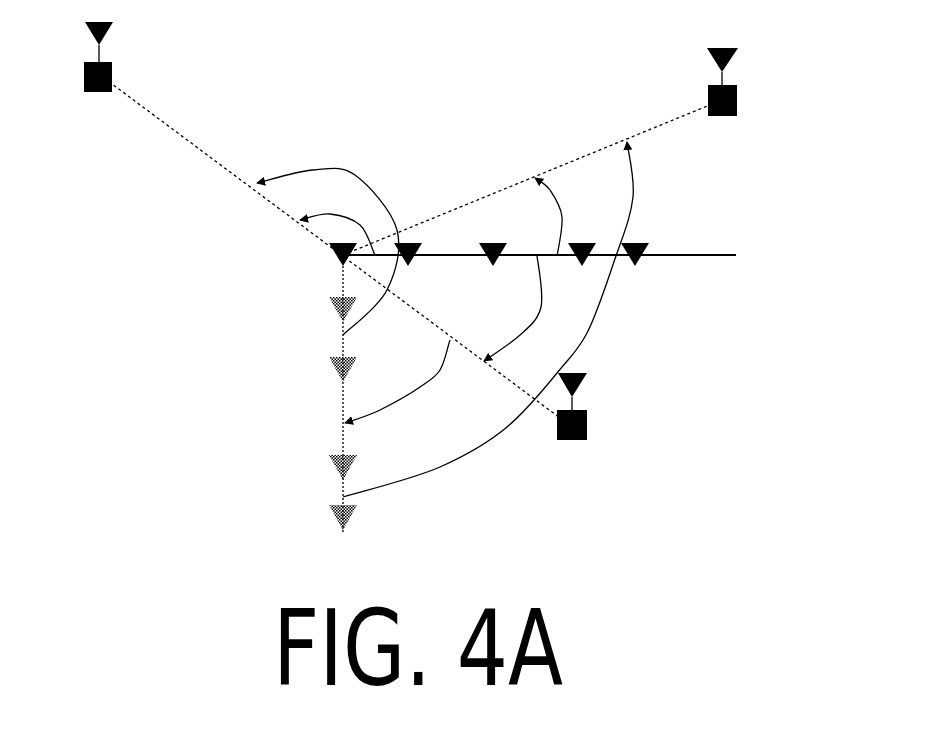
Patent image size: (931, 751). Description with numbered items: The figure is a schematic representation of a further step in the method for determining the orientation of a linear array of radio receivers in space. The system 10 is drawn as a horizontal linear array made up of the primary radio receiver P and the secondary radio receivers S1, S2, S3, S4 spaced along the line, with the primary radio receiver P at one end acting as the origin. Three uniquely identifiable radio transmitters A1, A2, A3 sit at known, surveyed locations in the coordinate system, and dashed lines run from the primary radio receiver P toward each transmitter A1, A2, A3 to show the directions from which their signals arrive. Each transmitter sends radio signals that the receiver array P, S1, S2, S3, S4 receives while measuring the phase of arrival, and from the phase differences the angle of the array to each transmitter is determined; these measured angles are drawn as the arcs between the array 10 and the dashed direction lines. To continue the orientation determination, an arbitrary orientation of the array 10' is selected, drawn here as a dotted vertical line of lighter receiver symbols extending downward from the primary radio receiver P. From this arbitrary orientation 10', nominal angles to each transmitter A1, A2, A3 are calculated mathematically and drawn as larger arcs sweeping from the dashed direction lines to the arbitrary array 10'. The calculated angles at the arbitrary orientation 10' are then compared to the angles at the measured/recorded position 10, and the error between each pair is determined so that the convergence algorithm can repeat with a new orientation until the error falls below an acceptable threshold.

The radio transmitter A1 is at (737, 90).
The radio transmitter A2 is at (585, 442).
The radio transmitter A3 is at (88, 93).
The primary radio receiver P is at (340, 263).
The secondary radio receiver S1 is at (409, 243).
The secondary radio receiver S2 is at (494, 243).
The secondary radio receiver S3 is at (588, 262).
The secondary radio receiver S4 is at (642, 262).
The system 10 is at (566, 216).
The arbitrary orientation of the array 10' is at (279, 397).